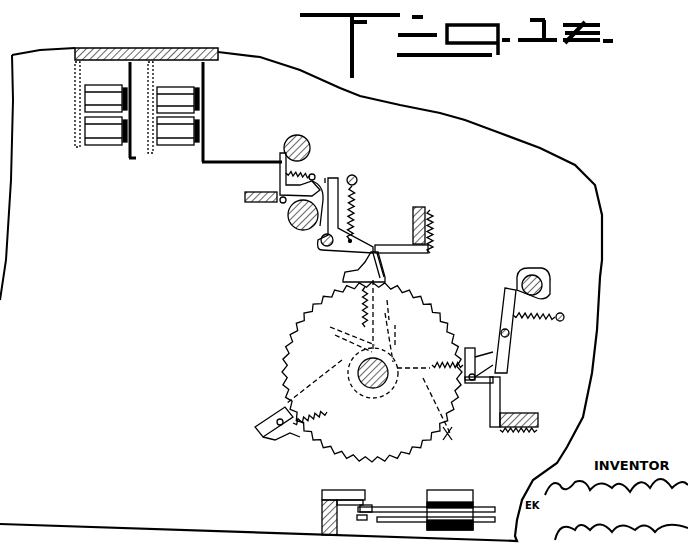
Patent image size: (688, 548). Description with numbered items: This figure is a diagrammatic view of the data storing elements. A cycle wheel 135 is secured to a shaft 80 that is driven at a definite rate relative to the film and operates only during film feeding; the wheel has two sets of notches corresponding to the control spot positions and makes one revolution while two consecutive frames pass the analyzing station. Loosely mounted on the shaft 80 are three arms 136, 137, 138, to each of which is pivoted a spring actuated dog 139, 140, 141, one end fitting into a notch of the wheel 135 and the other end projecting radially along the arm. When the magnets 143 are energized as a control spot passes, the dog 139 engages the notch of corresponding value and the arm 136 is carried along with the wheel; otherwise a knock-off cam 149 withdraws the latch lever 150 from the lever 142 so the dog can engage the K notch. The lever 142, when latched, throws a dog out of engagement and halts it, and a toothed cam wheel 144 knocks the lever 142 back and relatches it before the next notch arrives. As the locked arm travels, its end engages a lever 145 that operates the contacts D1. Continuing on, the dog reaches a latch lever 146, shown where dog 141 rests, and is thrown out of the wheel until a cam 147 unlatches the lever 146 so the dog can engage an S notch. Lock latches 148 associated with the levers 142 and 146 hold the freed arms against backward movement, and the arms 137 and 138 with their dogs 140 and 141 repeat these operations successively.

The shaft 80 is at (370, 388).
The cycle wheel 135 is at (310, 323).
The arm 136 is at (402, 321).
The arm 137 is at (341, 358).
The arm 138 is at (444, 411).
The spring actuated dog 139 is at (362, 263).
The spring actuated dog 140 is at (284, 430).
The spring actuated dog 141 is at (476, 357).
The lever 142 is at (353, 200).
The magnets 143 is at (106, 148).
The cam wheel 144 is at (288, 217).
The lever 145 is at (347, 492).
The latch lever 146 is at (513, 327).
The cam 147 is at (540, 270).
The lock latches 148 is at (400, 252).
The knock-off cam 149 is at (310, 151).
The latch lever 150 is at (281, 170).
The contacts D1 is at (380, 505).